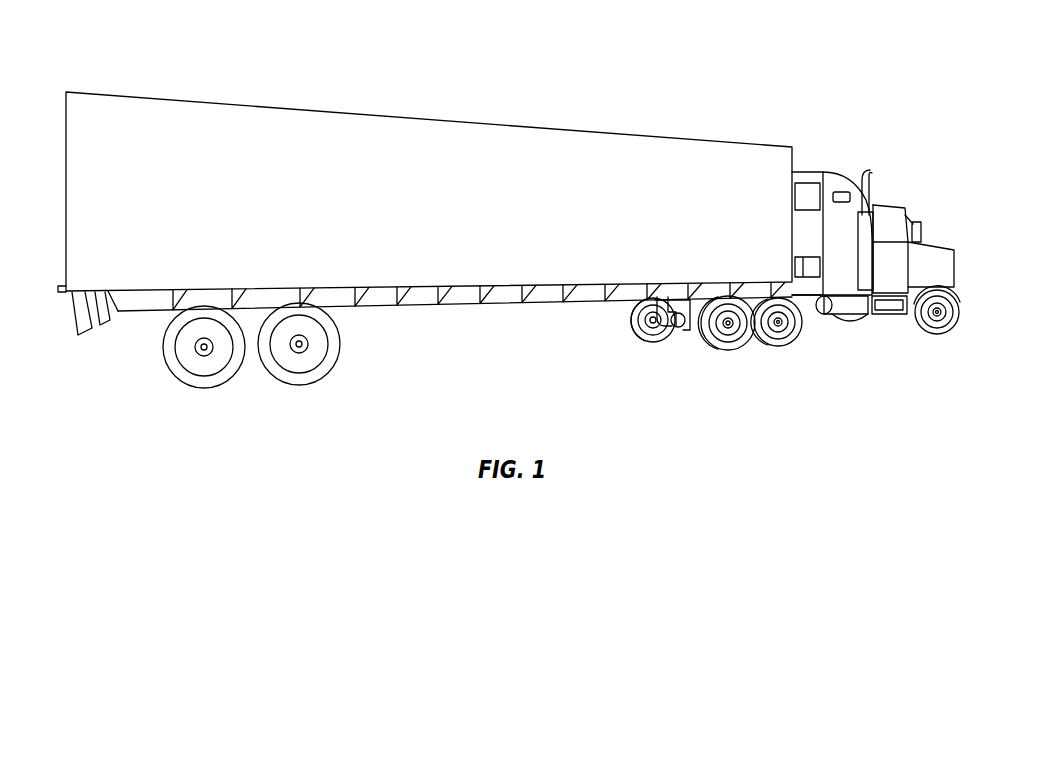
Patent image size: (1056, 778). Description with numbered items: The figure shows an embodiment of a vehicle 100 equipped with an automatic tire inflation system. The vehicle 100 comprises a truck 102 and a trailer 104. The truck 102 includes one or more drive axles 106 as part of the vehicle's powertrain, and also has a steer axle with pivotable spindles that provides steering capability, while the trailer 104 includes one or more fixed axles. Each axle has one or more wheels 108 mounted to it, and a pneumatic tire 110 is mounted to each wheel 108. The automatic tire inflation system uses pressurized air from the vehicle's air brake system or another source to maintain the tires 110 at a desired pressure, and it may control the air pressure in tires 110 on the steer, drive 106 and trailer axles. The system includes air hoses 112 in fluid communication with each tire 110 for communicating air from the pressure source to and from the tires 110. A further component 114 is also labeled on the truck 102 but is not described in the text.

The vehicle 100 is at (797, 73).
The truck 102 is at (807, 165).
The trailer 104 is at (430, 118).
The drive axle 106 is at (685, 338).
The wheel 108 is at (184, 368).
The pneumatic tire 110 is at (205, 388).
The air hose 112 is at (203, 347).
The step box 114 is at (887, 314).